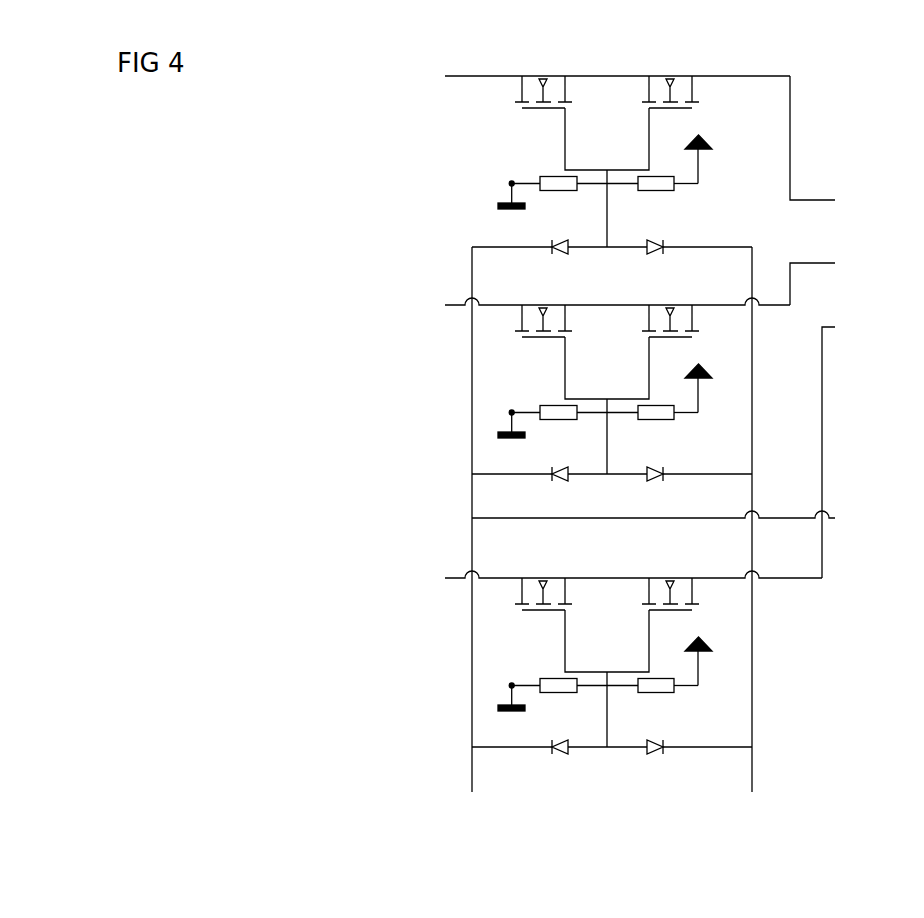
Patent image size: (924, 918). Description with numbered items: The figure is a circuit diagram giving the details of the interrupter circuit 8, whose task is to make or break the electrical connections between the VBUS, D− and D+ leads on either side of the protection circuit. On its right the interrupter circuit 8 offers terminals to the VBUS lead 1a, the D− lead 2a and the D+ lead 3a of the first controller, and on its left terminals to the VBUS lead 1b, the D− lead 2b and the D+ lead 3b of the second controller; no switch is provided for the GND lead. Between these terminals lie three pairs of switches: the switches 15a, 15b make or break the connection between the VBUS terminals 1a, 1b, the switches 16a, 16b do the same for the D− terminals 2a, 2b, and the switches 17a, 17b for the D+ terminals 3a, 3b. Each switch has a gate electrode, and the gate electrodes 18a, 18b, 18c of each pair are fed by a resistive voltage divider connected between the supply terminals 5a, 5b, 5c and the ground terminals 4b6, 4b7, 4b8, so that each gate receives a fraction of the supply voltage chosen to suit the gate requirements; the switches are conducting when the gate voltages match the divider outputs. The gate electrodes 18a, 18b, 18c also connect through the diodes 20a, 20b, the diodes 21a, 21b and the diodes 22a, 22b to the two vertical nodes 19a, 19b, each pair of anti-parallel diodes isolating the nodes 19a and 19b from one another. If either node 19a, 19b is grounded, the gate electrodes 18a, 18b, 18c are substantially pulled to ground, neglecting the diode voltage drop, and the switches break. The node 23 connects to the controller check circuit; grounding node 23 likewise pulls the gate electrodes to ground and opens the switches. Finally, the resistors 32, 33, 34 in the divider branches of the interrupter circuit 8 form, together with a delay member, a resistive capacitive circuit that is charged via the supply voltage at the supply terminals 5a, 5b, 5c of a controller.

The interrupter circuit 8 is at (342, 385).
The VBUS lead terminal of the first controller 1a is at (832, 147).
The VBUS lead terminal of the second controller 1b is at (596, 79).
The D− lead terminal of the first controller 2a is at (832, 277).
The D− lead terminal of the second controller 2b is at (595, 309).
The D+ lead terminal of the first controller 3a is at (848, 446).
The D+ lead terminal of the second controller 3b is at (612, 581).
The ground terminal 4b6 is at (515, 713).
The ground terminal 4b7 is at (515, 439).
The ground terminal 4b8 is at (515, 212).
The supply terminal 5a is at (710, 648).
The supply terminal 5b is at (710, 374).
The supply terminal 5c is at (709, 146).
The switch 15a is at (670, 74).
The switch 15b is at (543, 74).
The switch 16a is at (670, 304).
The switch 16b is at (543, 304).
The switch 17a is at (670, 577).
The switch 17b is at (543, 577).
The gate electrode 18a is at (594, 678).
The gate electrode 18b is at (594, 405).
The gate electrode 18c is at (594, 177).
The node 19a is at (752, 541).
The node 19b is at (473, 541).
The diode 20a is at (660, 232).
The diode 20b is at (538, 232).
The diode 21a is at (660, 459).
The diode 21b is at (538, 459).
The diode 22a is at (660, 731).
The diode 22b is at (538, 731).
The node 23 is at (673, 519).
The resistor 32 is at (674, 199).
The resistor 33 is at (673, 426).
The resistor 34 is at (673, 699).